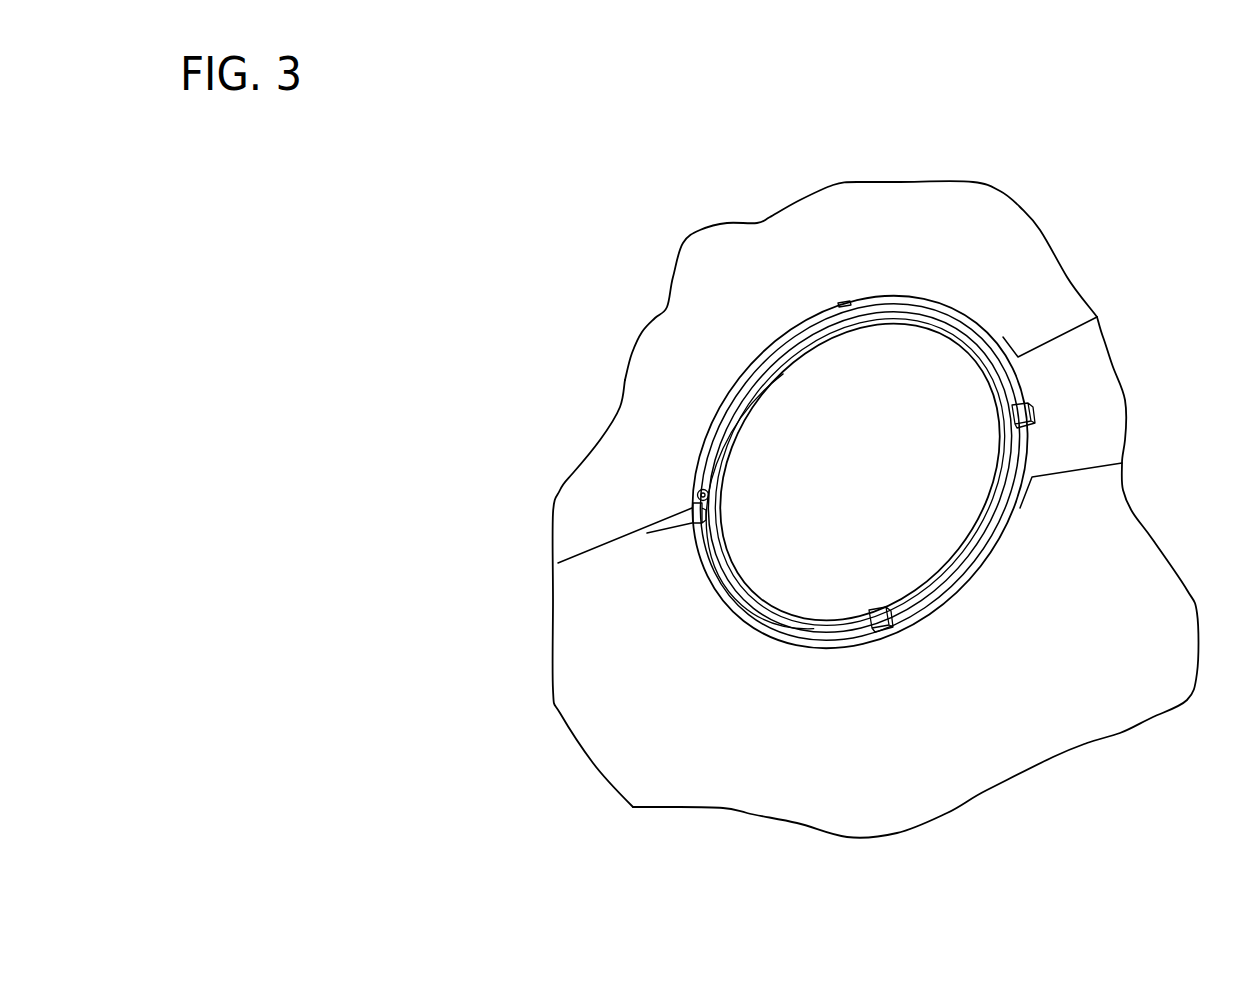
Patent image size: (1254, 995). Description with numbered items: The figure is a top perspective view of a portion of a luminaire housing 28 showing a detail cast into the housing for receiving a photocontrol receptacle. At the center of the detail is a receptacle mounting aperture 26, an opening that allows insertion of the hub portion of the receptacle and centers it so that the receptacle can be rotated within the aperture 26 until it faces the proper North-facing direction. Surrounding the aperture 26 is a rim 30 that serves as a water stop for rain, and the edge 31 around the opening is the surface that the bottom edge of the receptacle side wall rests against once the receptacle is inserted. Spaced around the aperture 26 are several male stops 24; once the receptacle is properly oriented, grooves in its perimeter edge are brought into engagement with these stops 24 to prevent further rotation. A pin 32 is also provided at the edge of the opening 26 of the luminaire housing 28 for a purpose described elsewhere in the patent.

The male stops 24 is at (1023, 415).
The receptacle mounting aperture 26 is at (832, 424).
The luminaire housing 28 is at (785, 250).
The rim 30 is at (737, 393).
The edge 31 is at (970, 547).
The pin 32 is at (697, 493).